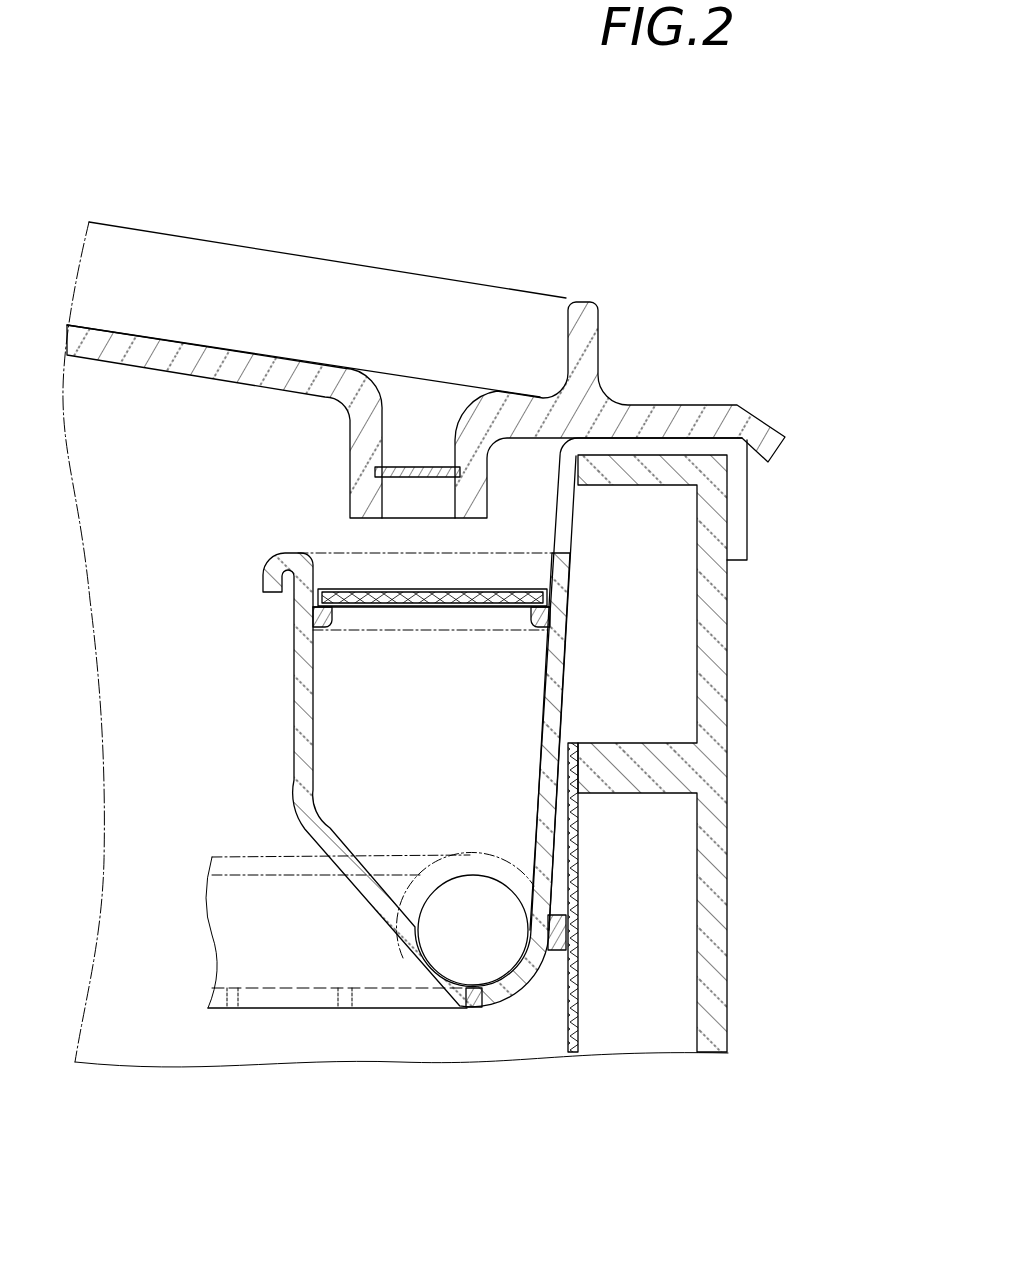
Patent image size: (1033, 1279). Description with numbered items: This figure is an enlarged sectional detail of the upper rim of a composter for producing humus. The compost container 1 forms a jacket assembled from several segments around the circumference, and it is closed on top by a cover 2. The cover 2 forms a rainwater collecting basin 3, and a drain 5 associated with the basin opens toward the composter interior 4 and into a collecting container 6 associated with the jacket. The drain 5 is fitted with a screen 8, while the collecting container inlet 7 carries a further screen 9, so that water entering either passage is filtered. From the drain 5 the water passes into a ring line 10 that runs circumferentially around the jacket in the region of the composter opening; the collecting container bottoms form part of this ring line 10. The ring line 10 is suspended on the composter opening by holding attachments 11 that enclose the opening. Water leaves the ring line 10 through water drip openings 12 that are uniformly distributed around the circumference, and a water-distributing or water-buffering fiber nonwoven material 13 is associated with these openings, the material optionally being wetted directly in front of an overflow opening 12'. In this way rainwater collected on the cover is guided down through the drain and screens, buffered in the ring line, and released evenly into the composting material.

The compost container 1 is at (733, 322).
The cover 2 is at (336, 205).
The rainwater collecting basin 3 is at (458, 313).
The composter interior 4 is at (188, 797).
The drain 5 is at (400, 498).
The collecting container 6 is at (303, 691).
The collecting container inlet 7 is at (513, 572).
The screen 8 is at (414, 468).
The screen 9 is at (318, 600).
The ring line 10 is at (288, 948).
The holding attachments 11 is at (735, 515).
The water drip openings 12 is at (354, 1102).
The overflow opening 12' is at (542, 1066).
The fiber nonwoven material 13 is at (573, 1005).